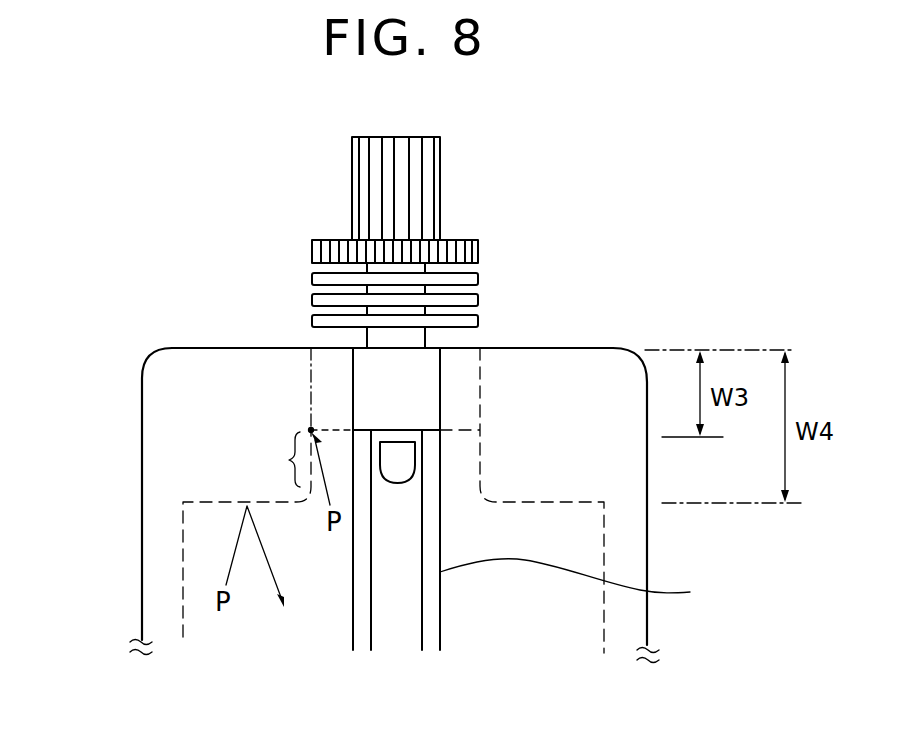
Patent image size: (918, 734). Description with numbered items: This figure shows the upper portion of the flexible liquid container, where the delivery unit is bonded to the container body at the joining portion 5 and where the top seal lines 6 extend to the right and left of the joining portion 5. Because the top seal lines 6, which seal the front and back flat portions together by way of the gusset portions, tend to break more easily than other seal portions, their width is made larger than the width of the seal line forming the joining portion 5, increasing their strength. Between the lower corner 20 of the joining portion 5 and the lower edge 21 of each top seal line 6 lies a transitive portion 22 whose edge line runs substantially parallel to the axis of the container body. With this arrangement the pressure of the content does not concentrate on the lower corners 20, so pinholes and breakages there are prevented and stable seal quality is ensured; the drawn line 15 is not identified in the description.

The joining portion 5 is at (467, 365).
The top seal lines 6 is at (553, 367).
The flexible member 15 is at (586, 581).
The lower corner 20 is at (311, 430).
The lower edge 21 is at (247, 502).
The transitive portion 22 is at (289, 460).